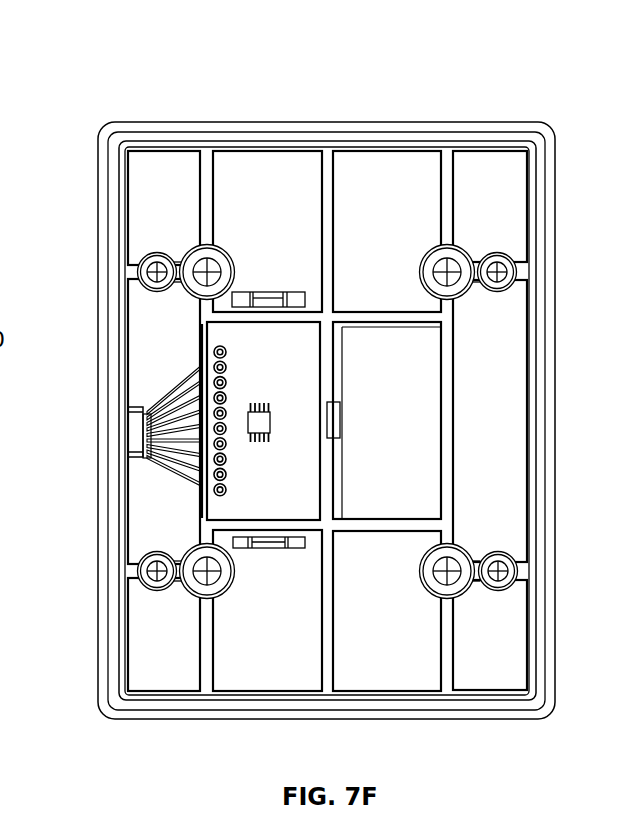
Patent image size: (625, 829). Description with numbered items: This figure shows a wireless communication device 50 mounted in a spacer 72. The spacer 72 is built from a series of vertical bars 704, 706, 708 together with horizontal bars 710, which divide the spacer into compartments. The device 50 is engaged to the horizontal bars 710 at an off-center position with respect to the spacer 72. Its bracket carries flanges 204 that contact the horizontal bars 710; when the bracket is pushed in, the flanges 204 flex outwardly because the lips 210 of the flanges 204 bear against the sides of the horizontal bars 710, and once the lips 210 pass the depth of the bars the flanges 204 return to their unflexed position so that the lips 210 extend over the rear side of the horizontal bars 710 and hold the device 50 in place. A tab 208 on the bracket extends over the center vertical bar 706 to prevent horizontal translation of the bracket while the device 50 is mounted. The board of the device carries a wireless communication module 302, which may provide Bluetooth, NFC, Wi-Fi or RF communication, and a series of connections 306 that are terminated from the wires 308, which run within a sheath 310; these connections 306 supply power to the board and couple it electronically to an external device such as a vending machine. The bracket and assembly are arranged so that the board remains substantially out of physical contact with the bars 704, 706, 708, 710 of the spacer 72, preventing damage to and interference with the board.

The spacer 72 is at (88, 60).
The wireless communication device 50 is at (267, 184).
The vertical bar 704 is at (206, 151).
The center vertical bar 706 is at (329, 154).
The vertical bar 708 is at (446, 156).
The horizontal bars 710 is at (427, 316).
The flanges 204 is at (268, 523).
The lips 210 is at (263, 548).
The connections 306 is at (216, 348).
The wires 308 is at (173, 457).
The sheath 310 is at (137, 412).
The wireless communication module 302 is at (271, 422).
The tab 208 is at (341, 420).